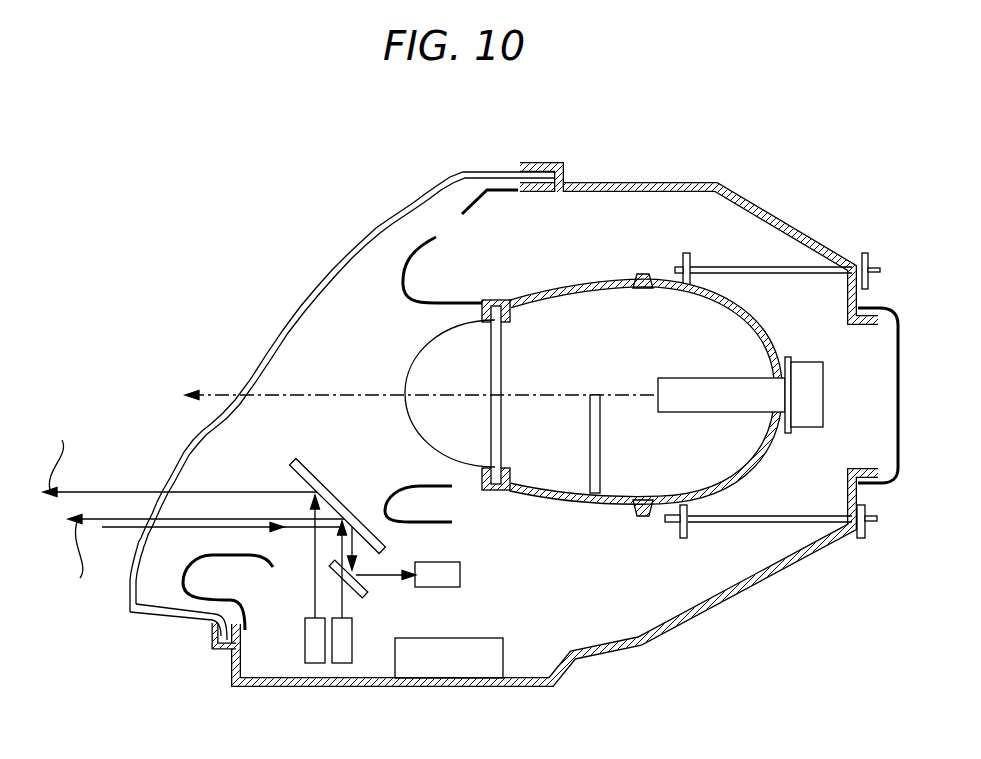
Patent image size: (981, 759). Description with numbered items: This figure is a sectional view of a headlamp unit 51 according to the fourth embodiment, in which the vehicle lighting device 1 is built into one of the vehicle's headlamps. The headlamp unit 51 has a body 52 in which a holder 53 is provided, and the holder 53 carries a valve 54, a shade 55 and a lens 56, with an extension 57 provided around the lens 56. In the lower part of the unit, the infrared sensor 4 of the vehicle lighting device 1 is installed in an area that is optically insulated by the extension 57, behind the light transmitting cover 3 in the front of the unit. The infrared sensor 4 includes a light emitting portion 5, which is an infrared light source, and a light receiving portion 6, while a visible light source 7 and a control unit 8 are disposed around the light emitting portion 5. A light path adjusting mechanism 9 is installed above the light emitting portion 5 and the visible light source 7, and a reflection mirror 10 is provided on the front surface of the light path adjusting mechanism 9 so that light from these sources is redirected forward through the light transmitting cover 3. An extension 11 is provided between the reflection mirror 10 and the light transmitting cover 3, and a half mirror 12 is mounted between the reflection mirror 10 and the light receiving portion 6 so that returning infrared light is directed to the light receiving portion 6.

The vehicle lighting device 1 is at (274, 645).
The light transmitting cover 3 is at (192, 466).
The infrared sensor 4 is at (476, 604).
The light emitting portion 5 is at (347, 665).
The light receiving portion 6 is at (452, 575).
The visible light source 7 is at (315, 665).
The control unit 8 is at (440, 668).
The light path adjusting mechanism 9 is at (318, 463).
The reflection mirror 10 is at (297, 479).
The extension 11 is at (187, 587).
The half mirror 12 is at (370, 592).
The headlamp unit 51 is at (347, 230).
The body 52 is at (632, 182).
The holder 53 is at (748, 312).
The valve 54 is at (678, 405).
The shade 55 is at (592, 430).
The lens 56 is at (428, 355).
The extension 57 is at (413, 484).